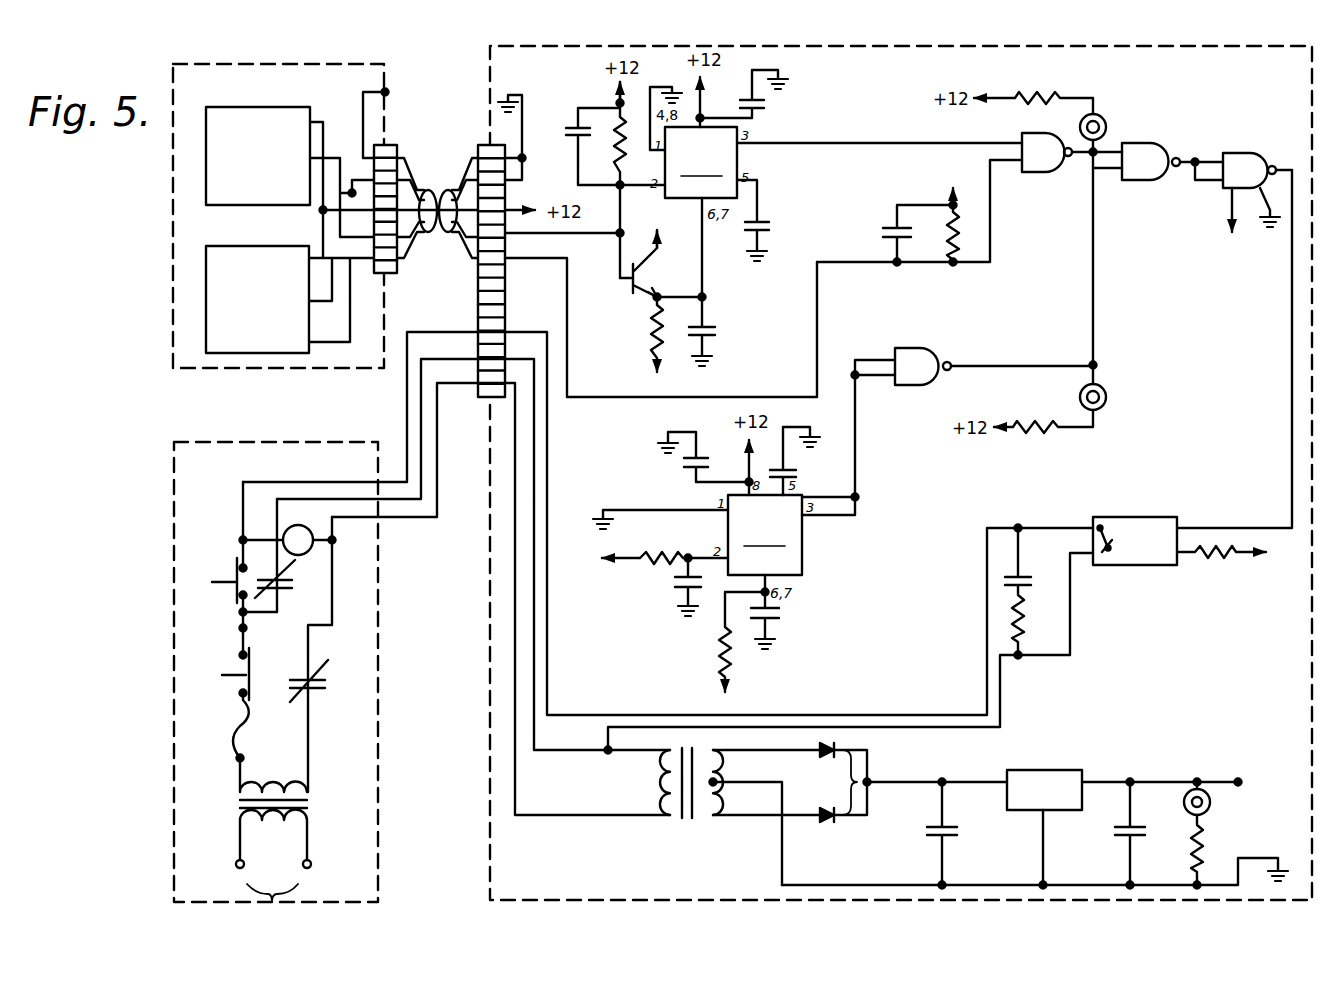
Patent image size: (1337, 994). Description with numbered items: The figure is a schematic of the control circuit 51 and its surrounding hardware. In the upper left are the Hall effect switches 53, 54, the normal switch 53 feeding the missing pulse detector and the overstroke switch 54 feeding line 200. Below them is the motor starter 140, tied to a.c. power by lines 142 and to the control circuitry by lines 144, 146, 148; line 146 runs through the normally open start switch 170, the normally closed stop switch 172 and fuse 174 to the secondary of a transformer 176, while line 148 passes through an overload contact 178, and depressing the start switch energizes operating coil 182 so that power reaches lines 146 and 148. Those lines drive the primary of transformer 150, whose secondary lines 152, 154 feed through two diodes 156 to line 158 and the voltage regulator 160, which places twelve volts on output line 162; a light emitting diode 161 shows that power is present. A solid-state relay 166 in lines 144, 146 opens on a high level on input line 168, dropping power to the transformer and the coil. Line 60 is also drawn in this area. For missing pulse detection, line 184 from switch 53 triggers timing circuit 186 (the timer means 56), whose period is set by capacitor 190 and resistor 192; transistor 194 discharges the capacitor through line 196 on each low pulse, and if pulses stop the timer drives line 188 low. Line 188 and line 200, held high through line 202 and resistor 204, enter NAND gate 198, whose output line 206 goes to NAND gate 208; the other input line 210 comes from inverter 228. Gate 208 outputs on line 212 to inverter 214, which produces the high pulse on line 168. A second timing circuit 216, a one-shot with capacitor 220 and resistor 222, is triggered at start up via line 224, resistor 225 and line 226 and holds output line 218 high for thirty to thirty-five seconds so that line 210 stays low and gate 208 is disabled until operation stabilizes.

The control circuit 51 is at (372, 392).
The Hall effect switch 53 is at (275, 94).
The overstroke Hall effect switch 54 is at (258, 230).
The timer means 56 is at (474, 132).
The sensor wire 60 is at (880, 258).
The motor starter 140 is at (170, 488).
The lines 142 is at (273, 899).
The line 144 is at (406, 430).
The line 146 is at (259, 480).
The line 148 is at (437, 520).
The transformer 150 is at (689, 824).
The line 152 is at (724, 752).
The line 154 is at (738, 818).
The diodes 156 is at (839, 782).
The line 158 is at (904, 782).
The voltage regulator 160 is at (1070, 770).
The light emitting diode 161 is at (1211, 810).
The output line 162 is at (1238, 782).
The solid-state relay 166 is at (1170, 502).
The input line 168 is at (1260, 507).
The start switch 170 is at (237, 562).
The stop switch 172 is at (242, 656).
The fuse 174 is at (243, 730).
The transformer 176 is at (240, 809).
The overload contact 178 is at (316, 682).
The operating coil 182 is at (293, 524).
The line 184 is at (337, 155).
The timing circuit 186 is at (755, 160).
The line 188 is at (848, 143).
The capacitor 190 is at (716, 322).
The resistor 192 is at (652, 332).
The transistor 194 is at (628, 290).
The line 196 is at (714, 284).
The NAND gate 198 is at (1043, 174).
The line 200 is at (375, 264).
The line 202 is at (897, 204).
The resistor 204 is at (950, 264).
The output line 206 is at (1110, 150).
The NAND gate 208 is at (1147, 178).
The input line 210 is at (1095, 284).
The line 212 is at (1208, 160).
The inverter 214 is at (1243, 154).
The timing circuit 216 is at (817, 536).
The output line 218 is at (856, 481).
The capacitor 220 is at (798, 622).
The resistor 222 is at (722, 636).
The line 224 is at (688, 552).
The resistor 225 is at (656, 592).
The line 226 is at (612, 568).
The inverter 228 is at (950, 380).